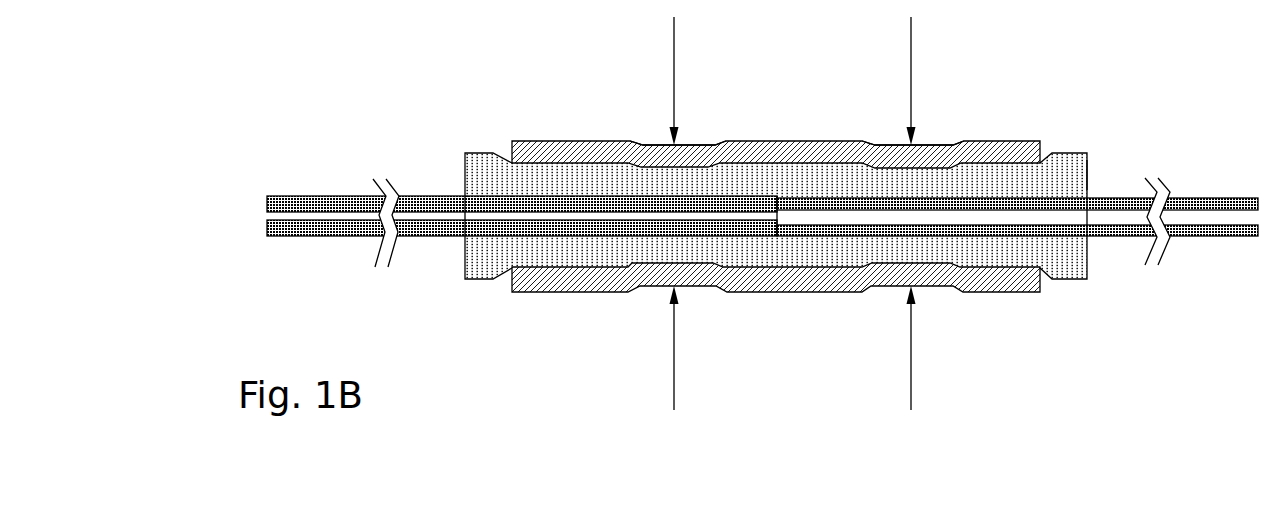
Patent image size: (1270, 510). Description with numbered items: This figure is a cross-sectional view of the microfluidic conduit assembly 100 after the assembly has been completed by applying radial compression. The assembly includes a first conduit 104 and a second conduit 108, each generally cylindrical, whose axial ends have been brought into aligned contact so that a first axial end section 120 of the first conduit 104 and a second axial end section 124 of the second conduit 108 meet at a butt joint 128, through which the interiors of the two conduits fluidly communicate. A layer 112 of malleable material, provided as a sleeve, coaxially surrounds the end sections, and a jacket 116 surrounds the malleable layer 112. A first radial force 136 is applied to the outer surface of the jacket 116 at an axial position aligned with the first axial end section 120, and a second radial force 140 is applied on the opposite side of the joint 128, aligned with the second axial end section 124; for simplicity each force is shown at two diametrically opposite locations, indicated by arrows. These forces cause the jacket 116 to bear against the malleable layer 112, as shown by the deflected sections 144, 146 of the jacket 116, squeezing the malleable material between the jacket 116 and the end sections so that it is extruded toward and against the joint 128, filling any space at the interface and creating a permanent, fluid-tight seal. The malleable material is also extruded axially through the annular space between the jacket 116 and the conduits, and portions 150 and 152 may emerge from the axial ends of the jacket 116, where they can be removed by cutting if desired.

The microfluidic conduit assembly 100 is at (376, 110).
The first conduit 104 is at (1130, 195).
The second conduit 108 is at (448, 194).
The malleable layer 112 is at (1088, 173).
The jacket 116 is at (1043, 148).
The first axial end section 120 is at (980, 197).
The second axial end section 124 is at (560, 195).
The joint 128 is at (778, 170).
The first radial force 136 is at (911, 63).
The second radial force 140 is at (674, 75).
The deflected section 144 is at (892, 143).
The deflected section 146 is at (648, 142).
The extruded portion of malleable material 150 is at (1070, 280).
The extruded portion of malleable material 152 is at (470, 280).